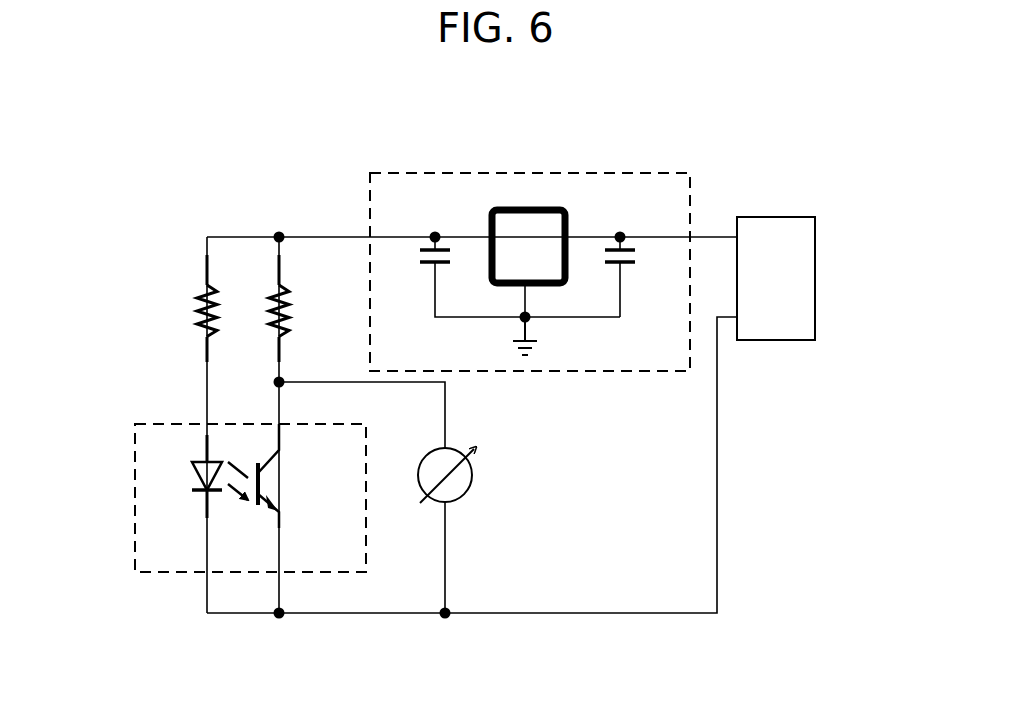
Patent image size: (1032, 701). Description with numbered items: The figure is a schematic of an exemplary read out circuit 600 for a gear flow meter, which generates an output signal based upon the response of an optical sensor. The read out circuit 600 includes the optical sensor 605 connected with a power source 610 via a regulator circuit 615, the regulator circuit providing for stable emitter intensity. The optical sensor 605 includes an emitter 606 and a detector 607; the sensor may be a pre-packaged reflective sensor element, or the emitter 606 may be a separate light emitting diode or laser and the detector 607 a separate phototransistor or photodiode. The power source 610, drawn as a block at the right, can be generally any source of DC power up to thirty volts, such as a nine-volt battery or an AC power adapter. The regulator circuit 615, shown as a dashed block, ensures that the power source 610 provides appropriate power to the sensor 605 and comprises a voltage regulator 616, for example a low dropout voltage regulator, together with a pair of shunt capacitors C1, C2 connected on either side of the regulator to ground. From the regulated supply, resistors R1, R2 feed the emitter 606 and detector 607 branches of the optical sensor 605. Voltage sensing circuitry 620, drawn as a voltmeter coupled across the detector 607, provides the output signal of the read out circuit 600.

The read out circuit 600 is at (172, 183).
The optical sensor 605 is at (145, 572).
The emitter 606 is at (192, 470).
The detector 607 is at (284, 482).
The power source 610 is at (790, 285).
The regulator circuit 615 is at (650, 173).
The voltage regulator 616 is at (523, 245).
The voltage sensing circuitry 620 is at (465, 495).
The resistor R1 is at (181, 308).
The resistor R2 is at (304, 308).
The shunt capacitor C1 is at (498, 277).
The shunt capacitor C2 is at (641, 277).